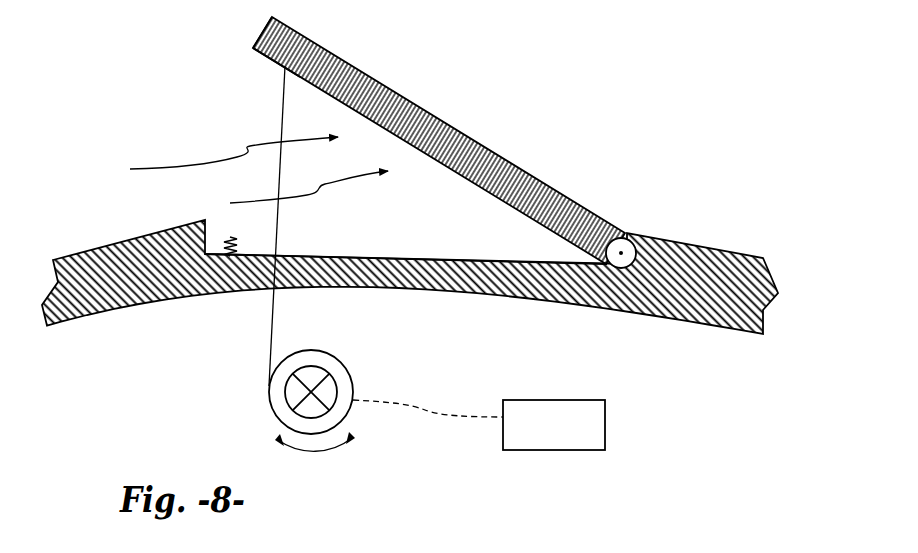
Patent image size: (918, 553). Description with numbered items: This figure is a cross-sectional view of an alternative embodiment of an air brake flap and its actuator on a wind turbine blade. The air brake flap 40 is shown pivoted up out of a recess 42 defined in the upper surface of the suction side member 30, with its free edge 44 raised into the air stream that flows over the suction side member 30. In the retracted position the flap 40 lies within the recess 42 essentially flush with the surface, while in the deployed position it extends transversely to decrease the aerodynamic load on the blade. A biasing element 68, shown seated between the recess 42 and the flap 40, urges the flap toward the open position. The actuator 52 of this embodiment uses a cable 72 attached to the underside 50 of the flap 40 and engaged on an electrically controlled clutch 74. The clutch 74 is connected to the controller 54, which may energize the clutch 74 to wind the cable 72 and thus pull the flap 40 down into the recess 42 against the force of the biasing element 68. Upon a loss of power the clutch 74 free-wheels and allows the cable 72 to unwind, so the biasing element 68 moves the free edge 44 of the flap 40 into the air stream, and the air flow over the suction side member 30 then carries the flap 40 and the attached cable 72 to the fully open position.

The suction side member 30 is at (90, 248).
The air brake flap 40 is at (487, 147).
The recess 42 is at (445, 262).
The free edge 44 is at (258, 44).
The underside 50 is at (260, 57).
The actuator 52 is at (466, 381).
The controller 54 is at (545, 452).
The biasing element 68 is at (238, 238).
The cable 72 is at (268, 303).
The electrically controlled clutch 74 is at (337, 393).